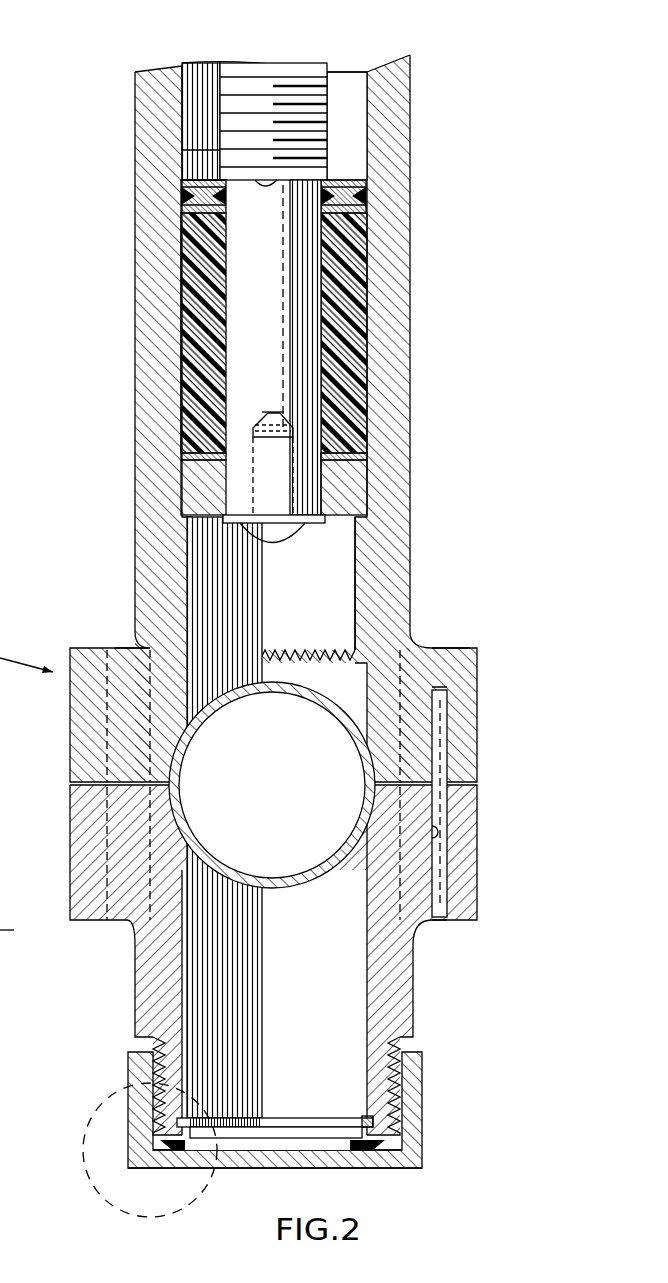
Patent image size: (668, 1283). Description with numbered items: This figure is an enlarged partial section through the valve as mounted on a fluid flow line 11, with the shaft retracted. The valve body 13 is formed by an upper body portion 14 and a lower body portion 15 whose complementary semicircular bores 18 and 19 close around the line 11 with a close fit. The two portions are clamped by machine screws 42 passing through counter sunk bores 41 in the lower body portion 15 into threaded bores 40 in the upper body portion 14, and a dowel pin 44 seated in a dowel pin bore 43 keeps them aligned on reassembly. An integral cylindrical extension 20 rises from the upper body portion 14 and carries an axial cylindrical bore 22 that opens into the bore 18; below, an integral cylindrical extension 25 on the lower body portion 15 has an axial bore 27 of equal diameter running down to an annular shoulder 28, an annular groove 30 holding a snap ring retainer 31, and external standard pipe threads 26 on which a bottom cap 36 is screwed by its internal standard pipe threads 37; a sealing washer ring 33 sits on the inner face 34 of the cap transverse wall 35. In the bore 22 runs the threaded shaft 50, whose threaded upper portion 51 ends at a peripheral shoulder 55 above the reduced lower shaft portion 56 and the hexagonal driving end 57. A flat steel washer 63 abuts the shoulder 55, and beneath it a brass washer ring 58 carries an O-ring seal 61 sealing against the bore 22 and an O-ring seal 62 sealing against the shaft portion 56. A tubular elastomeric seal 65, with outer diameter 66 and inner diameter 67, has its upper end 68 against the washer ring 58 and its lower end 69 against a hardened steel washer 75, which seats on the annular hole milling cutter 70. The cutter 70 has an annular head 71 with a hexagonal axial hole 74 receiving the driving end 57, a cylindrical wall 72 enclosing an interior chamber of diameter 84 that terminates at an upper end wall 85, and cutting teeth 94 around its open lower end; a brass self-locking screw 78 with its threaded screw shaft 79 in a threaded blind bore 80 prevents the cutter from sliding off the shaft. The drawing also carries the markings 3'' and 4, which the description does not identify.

The section detail circle 3'' is at (112, 1150).
The valve assembly 4 is at (14, 931).
The fluid flow line 11 is at (293, 887).
The valve body 13 is at (67, 657).
The upper body portion 14 is at (82, 700).
The lower body portion 15 is at (90, 848).
The semicircular bore 18 is at (337, 717).
The semicircular bore 19 is at (187, 833).
The integral cylindrical extension 20 is at (385, 395).
The cylindrical bore 22 is at (180, 318).
The integral cylindrical extension 25 is at (152, 958).
The external standard pipe threads 26 is at (160, 1073).
The axial bore 27 is at (370, 985).
The annular shoulder 28 is at (365, 1116).
The annular groove 30 is at (283, 1118).
The snap ring retainer 31 is at (320, 1120).
The sealing washer ring 33 is at (378, 1150).
The inner face 34 is at (326, 1153).
The transverse wall 35 is at (290, 1160).
The bottom cap 36 is at (425, 1137).
The internal standard pipe threads 37 is at (410, 1085).
The threaded bores 40 is at (116, 647).
The counter sunk bores 41 is at (82, 800).
The machine screw 42 is at (82, 740).
The dowel pin bore 43 is at (442, 830).
The dowel pin 44 is at (440, 725).
The threaded shaft 50 is at (245, 67).
The threaded upper portion 51 is at (225, 105).
The peripheral shoulder 55 is at (272, 178).
The lower shaft portion 56 is at (275, 271).
The driving end 57 is at (292, 527).
The brass washer ring 58 is at (360, 180).
The O-ring seal 61 is at (355, 200).
The O-ring seal 62 is at (218, 200).
The flat steel washer 63 is at (190, 170).
The tubular elastomeric seal 65 is at (183, 238).
The outer diameter 66 is at (182, 296).
The inner diameter 67 is at (312, 298).
The upper end 68 is at (183, 196).
The lower end 69 is at (345, 490).
The annular hole milling cutter 70 is at (185, 472).
The annular head 71 is at (200, 506).
The cylindrical wall 72 is at (357, 577).
The hexagonal axial hole 74 is at (264, 427).
The hardened steel washer 75 is at (355, 457).
The brass self-locking screw 78 is at (286, 545).
The threaded screw shaft 79 is at (265, 548).
The threaded blind bore 80 is at (269, 411).
The interior chamber diameter 84 is at (200, 578).
The upper end wall 85 is at (356, 537).
The cutting teeth 94 is at (300, 650).